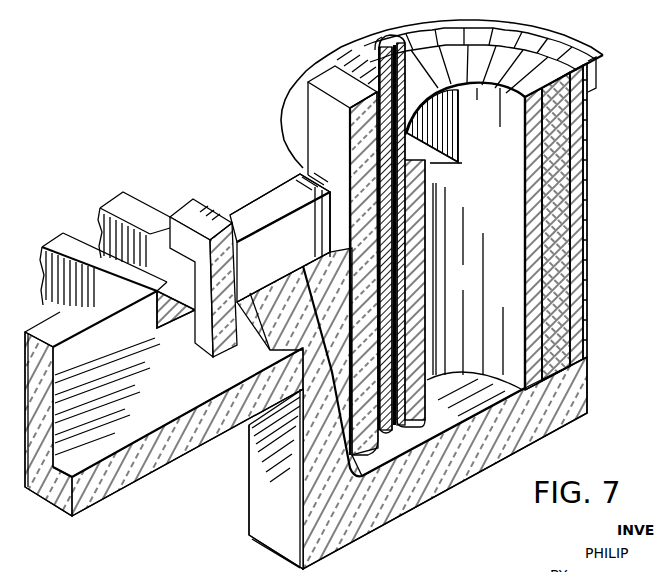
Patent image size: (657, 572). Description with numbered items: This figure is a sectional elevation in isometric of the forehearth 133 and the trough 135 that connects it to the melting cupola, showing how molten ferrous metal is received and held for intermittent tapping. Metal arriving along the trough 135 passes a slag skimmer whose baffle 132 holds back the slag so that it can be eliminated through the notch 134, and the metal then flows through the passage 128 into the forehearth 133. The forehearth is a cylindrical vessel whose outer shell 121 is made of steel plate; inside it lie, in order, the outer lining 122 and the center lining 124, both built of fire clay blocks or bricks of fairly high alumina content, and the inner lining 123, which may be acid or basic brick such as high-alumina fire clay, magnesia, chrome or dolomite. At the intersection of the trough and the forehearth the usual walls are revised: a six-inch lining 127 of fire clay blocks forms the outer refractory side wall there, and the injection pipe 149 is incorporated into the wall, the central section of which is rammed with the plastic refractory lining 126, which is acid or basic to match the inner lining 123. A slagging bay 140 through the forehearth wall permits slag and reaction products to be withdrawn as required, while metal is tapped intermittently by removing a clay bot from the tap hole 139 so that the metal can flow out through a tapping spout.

The outer shell 121 is at (583, 325).
The outer lining 122 is at (578, 268).
The inner lining 123 is at (525, 210).
The center lining 124 is at (552, 297).
The plastic refractory lining 126 is at (400, 290).
The side wall 127 is at (323, 110).
The passage 128 is at (307, 273).
The baffle 132 is at (203, 218).
The forehearth 133 is at (580, 413).
The notch 134 is at (174, 305).
The trough 135 is at (117, 503).
The tap hole 139 is at (427, 377).
The slagging bay 140 is at (433, 163).
The injection pipe 149 is at (385, 40).